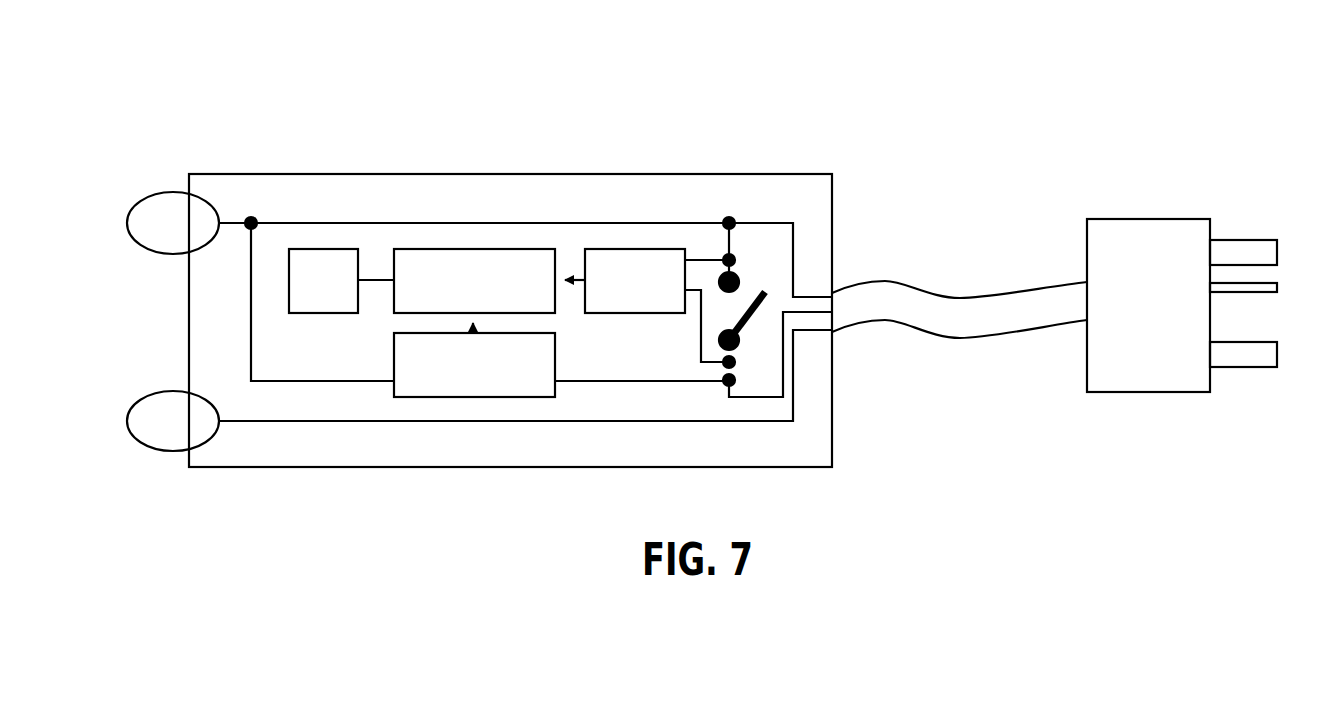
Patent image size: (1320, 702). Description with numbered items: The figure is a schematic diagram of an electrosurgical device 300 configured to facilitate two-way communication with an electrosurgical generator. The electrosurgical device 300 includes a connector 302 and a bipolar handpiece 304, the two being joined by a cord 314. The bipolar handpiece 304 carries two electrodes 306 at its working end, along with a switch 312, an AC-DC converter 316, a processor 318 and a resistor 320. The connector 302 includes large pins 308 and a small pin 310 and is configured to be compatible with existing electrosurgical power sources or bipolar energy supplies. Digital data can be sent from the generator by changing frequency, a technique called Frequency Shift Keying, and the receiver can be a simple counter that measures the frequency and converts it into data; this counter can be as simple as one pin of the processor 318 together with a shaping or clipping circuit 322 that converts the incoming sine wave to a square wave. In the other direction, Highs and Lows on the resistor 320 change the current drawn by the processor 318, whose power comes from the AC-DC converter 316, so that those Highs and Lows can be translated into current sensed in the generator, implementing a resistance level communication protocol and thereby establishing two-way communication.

The electrosurgical device 300 is at (911, 112).
The connector 302 is at (1143, 219).
The bipolar handpiece 304 is at (672, 174).
The electrodes 306 is at (173, 192).
The large pins 308 is at (1235, 240).
The small pin 310 is at (1263, 283).
The switch 312 is at (765, 292).
The cord 314 is at (1048, 288).
The AC-DC converter 316 is at (597, 262).
The processor 318 is at (411, 262).
The resistor 320 is at (303, 265).
The shaping (clipping) circuit 322 is at (413, 378).